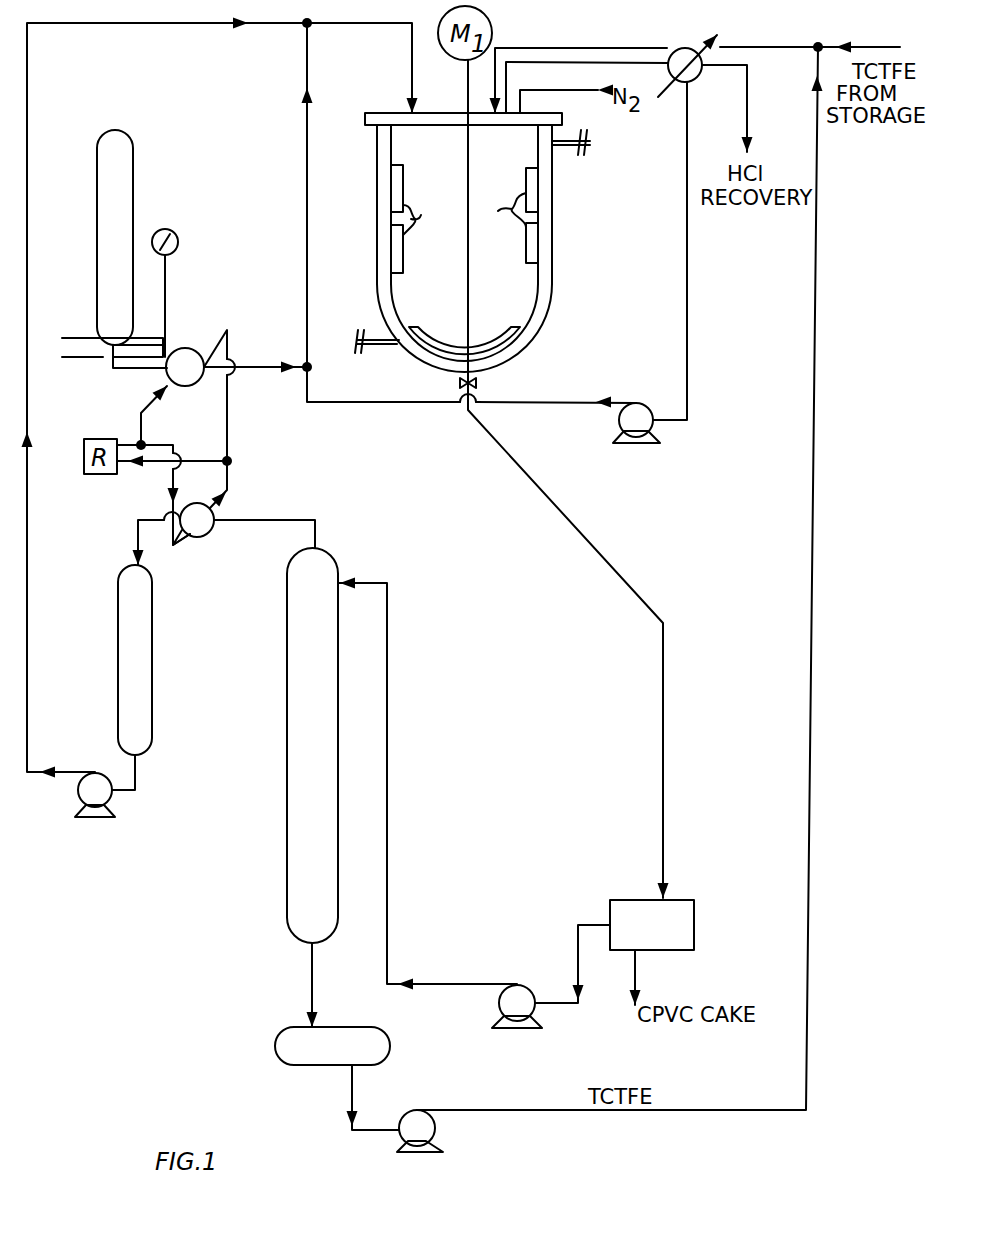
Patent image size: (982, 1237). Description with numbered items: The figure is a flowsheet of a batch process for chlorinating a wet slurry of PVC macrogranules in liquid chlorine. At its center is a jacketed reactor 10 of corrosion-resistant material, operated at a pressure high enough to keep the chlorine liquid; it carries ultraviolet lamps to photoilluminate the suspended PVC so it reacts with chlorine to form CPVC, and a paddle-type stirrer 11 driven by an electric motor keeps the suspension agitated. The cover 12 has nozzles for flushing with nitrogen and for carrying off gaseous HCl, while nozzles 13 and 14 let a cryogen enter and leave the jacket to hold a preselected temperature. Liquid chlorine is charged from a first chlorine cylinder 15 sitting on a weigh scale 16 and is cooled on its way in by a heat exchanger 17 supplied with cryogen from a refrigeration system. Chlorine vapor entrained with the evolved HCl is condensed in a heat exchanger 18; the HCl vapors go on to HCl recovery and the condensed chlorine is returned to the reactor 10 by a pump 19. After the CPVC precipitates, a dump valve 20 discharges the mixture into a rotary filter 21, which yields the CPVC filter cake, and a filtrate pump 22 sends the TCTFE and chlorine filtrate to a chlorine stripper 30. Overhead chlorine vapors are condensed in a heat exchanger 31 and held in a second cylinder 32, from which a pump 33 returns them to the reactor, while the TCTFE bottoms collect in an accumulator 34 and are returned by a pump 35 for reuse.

The jacketed reactor 10 is at (563, 270).
The paddle-type stirrer 11 is at (470, 290).
The cover 12 is at (447, 113).
The nozzle 13 is at (372, 346).
The nozzle 14 is at (566, 150).
The first chlorine cylinder 15 is at (135, 218).
The weigh scale 16 is at (166, 282).
The heat exchanger 17 is at (191, 386).
The heat exchanger 18 is at (690, 82).
The pump 19 is at (645, 432).
The dump valve 20 is at (478, 383).
The rotary filter 21 is at (684, 940).
The filtrate pump 22 is at (523, 1020).
The chlorine stripper 30 is at (280, 800).
The heat exchanger 31 is at (207, 536).
The second cylinder 32 is at (152, 698).
The pump 33 is at (112, 795).
The accumulator 34 is at (292, 1058).
The pump 35 is at (435, 1128).